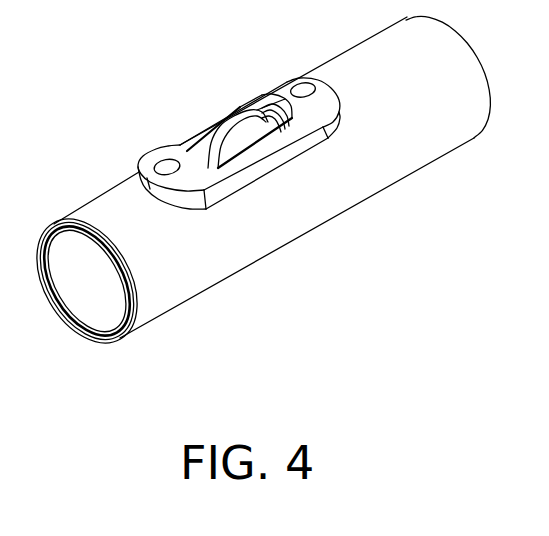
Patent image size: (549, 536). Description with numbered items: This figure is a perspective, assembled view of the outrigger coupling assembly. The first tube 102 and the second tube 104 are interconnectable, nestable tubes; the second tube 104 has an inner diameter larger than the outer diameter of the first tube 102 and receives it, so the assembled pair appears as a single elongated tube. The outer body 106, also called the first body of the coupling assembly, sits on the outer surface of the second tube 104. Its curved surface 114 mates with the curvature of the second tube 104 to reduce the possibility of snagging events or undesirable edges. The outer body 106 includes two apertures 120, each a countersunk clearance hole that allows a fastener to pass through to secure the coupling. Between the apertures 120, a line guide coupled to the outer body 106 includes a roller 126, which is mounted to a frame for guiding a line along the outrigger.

The first tube 102 is at (82, 283).
The second tube 104 is at (187, 295).
The outer body 106 is at (228, 110).
The curved surface 114 is at (168, 163).
The aperture 120 is at (158, 157).
The roller 126 is at (240, 107).